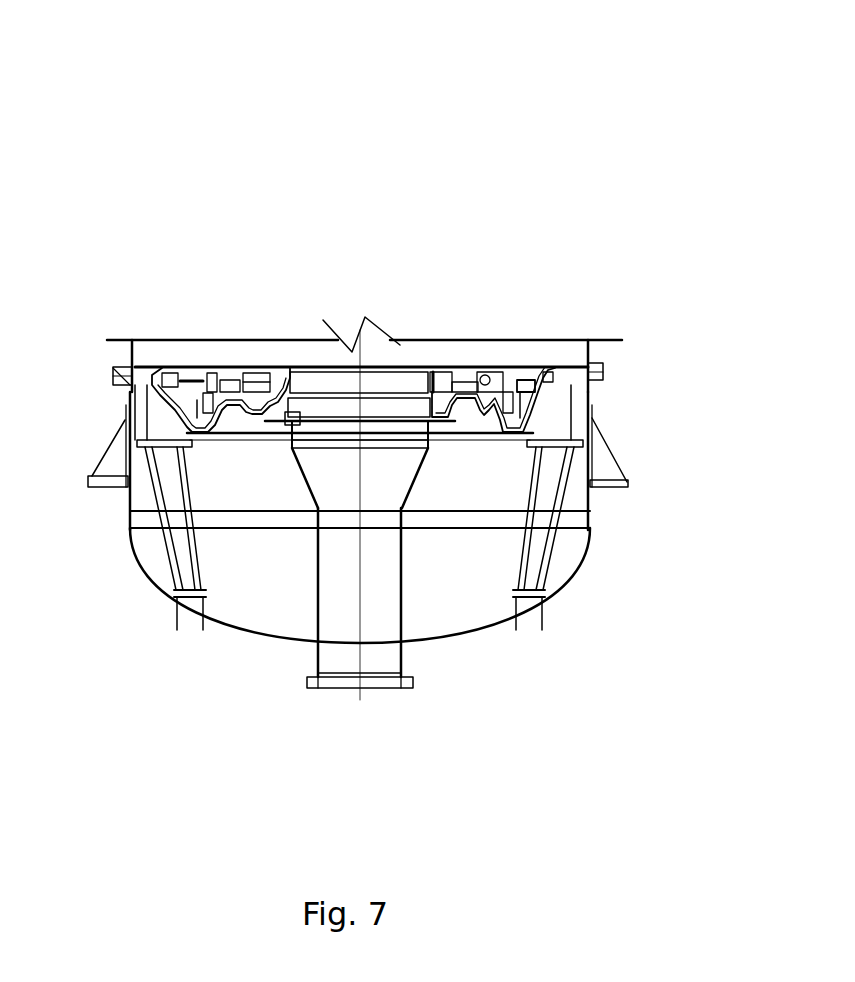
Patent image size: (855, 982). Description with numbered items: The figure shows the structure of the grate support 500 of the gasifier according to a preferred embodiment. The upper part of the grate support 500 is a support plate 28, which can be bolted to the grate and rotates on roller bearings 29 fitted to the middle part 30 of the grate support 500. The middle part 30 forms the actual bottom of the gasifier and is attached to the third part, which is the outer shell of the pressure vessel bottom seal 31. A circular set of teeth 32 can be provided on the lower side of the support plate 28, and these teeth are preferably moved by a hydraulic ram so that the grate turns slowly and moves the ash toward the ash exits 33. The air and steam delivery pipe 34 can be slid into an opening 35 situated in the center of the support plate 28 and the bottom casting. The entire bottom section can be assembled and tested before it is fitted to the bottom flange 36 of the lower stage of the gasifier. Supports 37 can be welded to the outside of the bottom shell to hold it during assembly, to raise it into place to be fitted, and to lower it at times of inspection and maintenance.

The grate support 500 is at (582, 115).
The support plate 28 is at (221, 352).
The roller bearings 29 is at (496, 350).
The middle part 30 is at (414, 457).
The outer shell of the pressure vessel bottom seal 31 is at (348, 577).
The circular set of teeth 32 is at (570, 453).
The ash exits 33 is at (391, 538).
The air and steam delivery pipe 34 is at (372, 607).
The opening 35 is at (366, 354).
The bottom flange 36 is at (309, 341).
The supports 37 is at (321, 437).